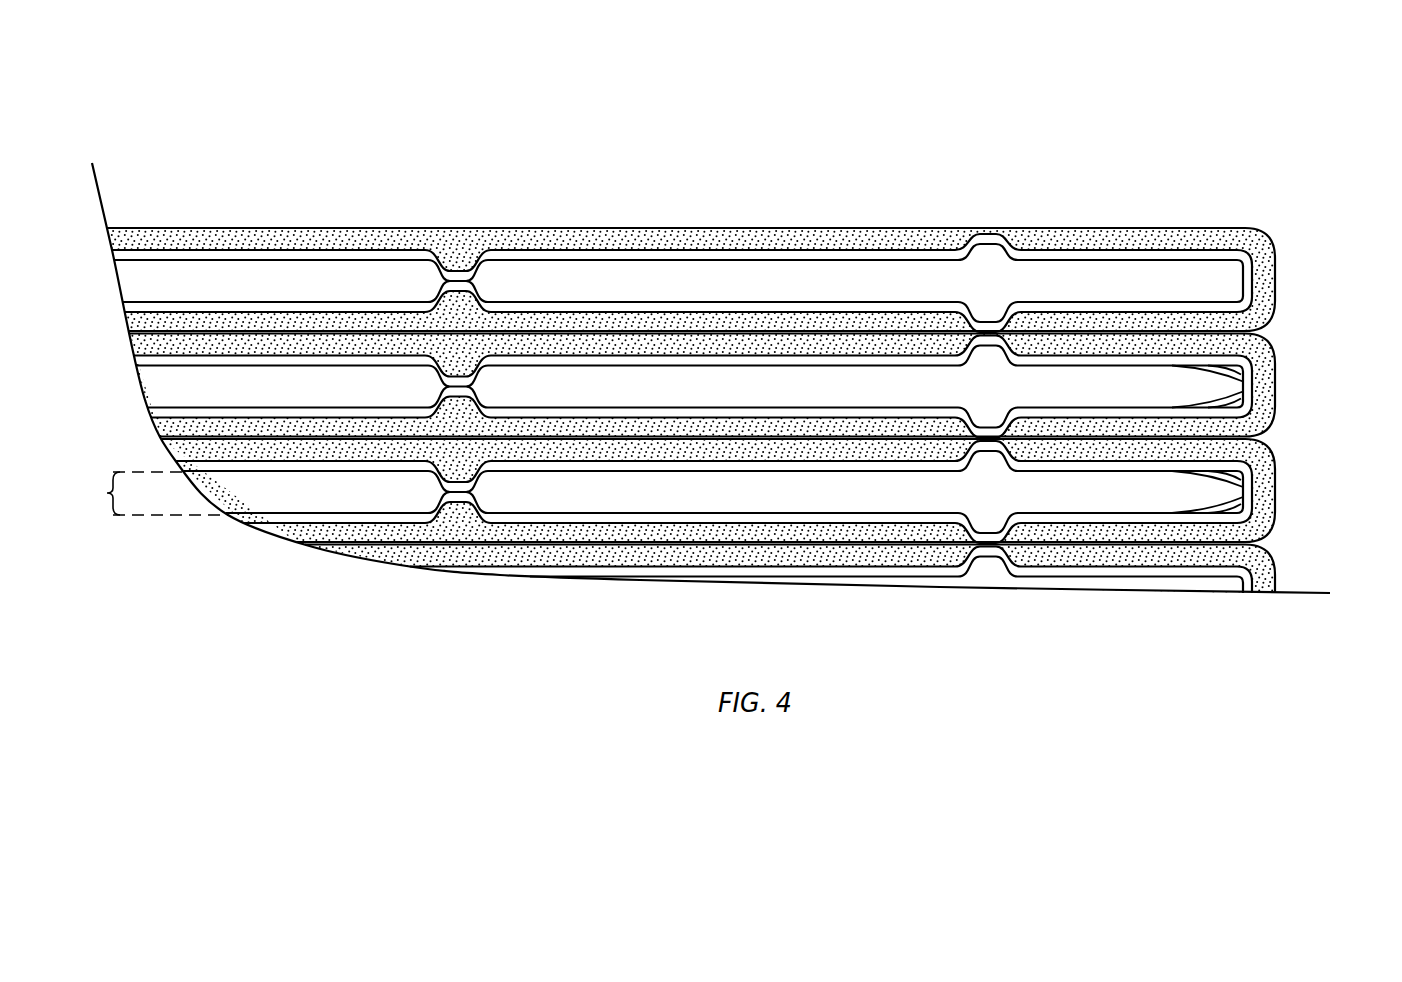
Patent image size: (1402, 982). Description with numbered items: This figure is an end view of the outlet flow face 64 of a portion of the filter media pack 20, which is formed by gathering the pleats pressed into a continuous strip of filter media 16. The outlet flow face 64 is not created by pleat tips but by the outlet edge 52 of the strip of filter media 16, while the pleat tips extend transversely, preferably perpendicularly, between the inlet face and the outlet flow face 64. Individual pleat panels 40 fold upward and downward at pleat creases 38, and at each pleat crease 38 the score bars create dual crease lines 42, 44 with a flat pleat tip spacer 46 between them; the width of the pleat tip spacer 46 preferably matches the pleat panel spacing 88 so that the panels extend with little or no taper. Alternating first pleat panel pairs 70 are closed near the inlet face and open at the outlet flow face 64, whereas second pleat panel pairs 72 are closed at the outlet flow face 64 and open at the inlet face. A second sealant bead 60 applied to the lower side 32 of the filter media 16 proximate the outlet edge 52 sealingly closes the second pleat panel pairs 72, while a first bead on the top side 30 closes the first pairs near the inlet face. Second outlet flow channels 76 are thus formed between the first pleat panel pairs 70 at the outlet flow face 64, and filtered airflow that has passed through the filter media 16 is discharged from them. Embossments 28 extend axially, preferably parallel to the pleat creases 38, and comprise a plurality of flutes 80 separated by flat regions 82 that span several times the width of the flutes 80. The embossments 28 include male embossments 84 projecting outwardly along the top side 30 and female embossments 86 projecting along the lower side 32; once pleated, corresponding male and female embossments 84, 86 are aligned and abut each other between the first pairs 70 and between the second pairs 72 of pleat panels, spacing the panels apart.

The filter media pack 20 is at (988, 168).
The filter media 16 is at (350, 262).
The embossments 28 is at (438, 297).
The top side 30 is at (240, 234).
The lower side 32 is at (160, 262).
The pleat creases 38 is at (1262, 282).
The pleat panels 40 is at (583, 310).
The dual crease line 42 is at (1256, 246).
The dual crease line 44 is at (1262, 315).
The pleat tip spacer 46 is at (1250, 279).
The outlet edge 52 is at (733, 260).
The second sealant bead 60 is at (858, 236).
The outlet flow face 64 is at (668, 409).
The first pleat panel pairs 70 is at (1245, 384).
The second pleat panel pairs 72 is at (1245, 375).
The second outlet flow channels 76 is at (973, 397).
The flutes 80 is at (918, 494).
The flat regions 82 is at (686, 523).
The male embossments 84 is at (973, 231).
The female embossments 86 is at (455, 253).
The pleat panel spacing 88 is at (107, 493).